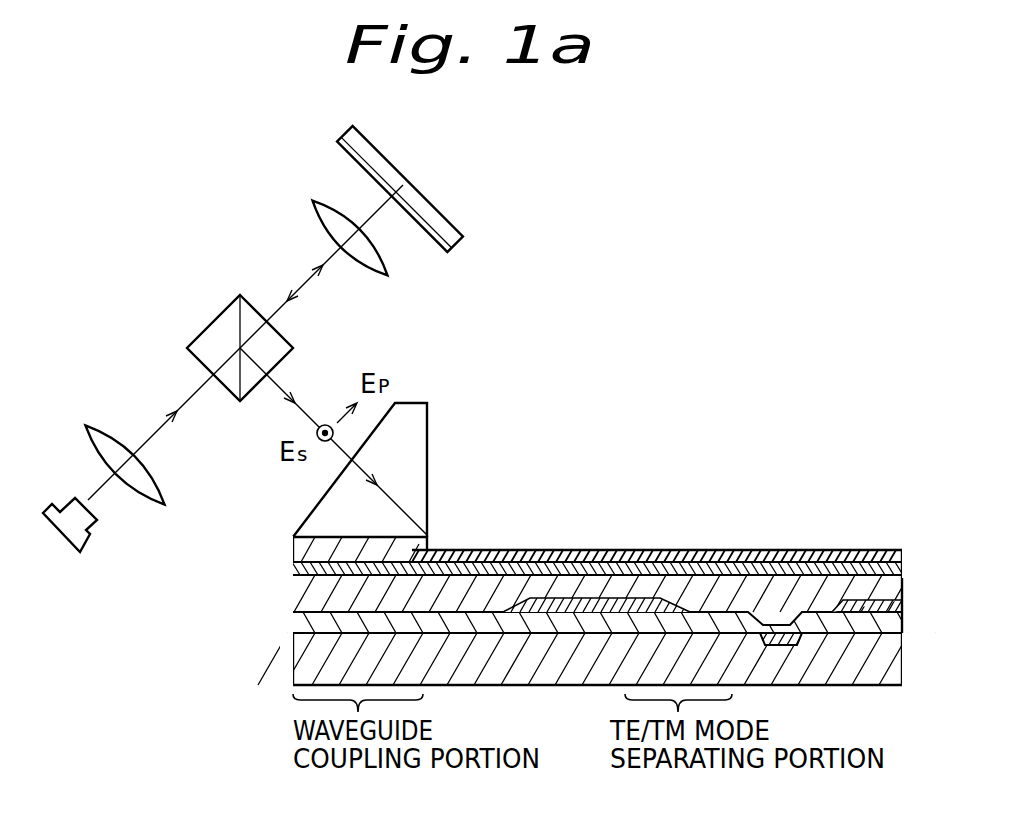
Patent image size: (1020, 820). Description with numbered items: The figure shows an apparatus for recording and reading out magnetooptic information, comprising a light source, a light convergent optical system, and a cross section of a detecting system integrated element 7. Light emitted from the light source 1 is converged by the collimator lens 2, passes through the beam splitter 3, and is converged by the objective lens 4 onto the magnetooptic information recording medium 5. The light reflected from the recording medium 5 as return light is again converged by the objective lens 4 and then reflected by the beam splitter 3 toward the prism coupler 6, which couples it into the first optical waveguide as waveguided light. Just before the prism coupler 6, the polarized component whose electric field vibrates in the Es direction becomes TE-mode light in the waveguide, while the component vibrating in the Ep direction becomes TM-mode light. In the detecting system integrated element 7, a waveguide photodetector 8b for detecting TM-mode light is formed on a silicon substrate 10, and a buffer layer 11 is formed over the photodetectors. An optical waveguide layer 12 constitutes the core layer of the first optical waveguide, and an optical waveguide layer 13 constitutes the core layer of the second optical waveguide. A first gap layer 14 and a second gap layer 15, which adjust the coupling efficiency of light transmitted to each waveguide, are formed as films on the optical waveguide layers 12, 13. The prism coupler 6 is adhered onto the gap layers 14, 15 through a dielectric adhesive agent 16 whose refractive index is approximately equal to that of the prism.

The light source 1 is at (82, 522).
The collimator lens 2 is at (118, 447).
The beam splitter 3 is at (222, 318).
The objective lens 4 is at (322, 203).
The magnetooptic information recording medium 5 is at (447, 230).
The prism coupler 6 is at (420, 440).
The detecting system integrated element 7 is at (600, 528).
The waveguide photodetector 8b is at (787, 647).
The silicon substrate 10 is at (300, 658).
The buffer layer 11 is at (300, 625).
The optical waveguide layer 12 is at (300, 590).
The optical waveguide layer 13 is at (628, 605).
The first gap layer 14 is at (868, 573).
The second gap layer 15 is at (793, 555).
The dielectric adhesive agent 16 is at (293, 545).